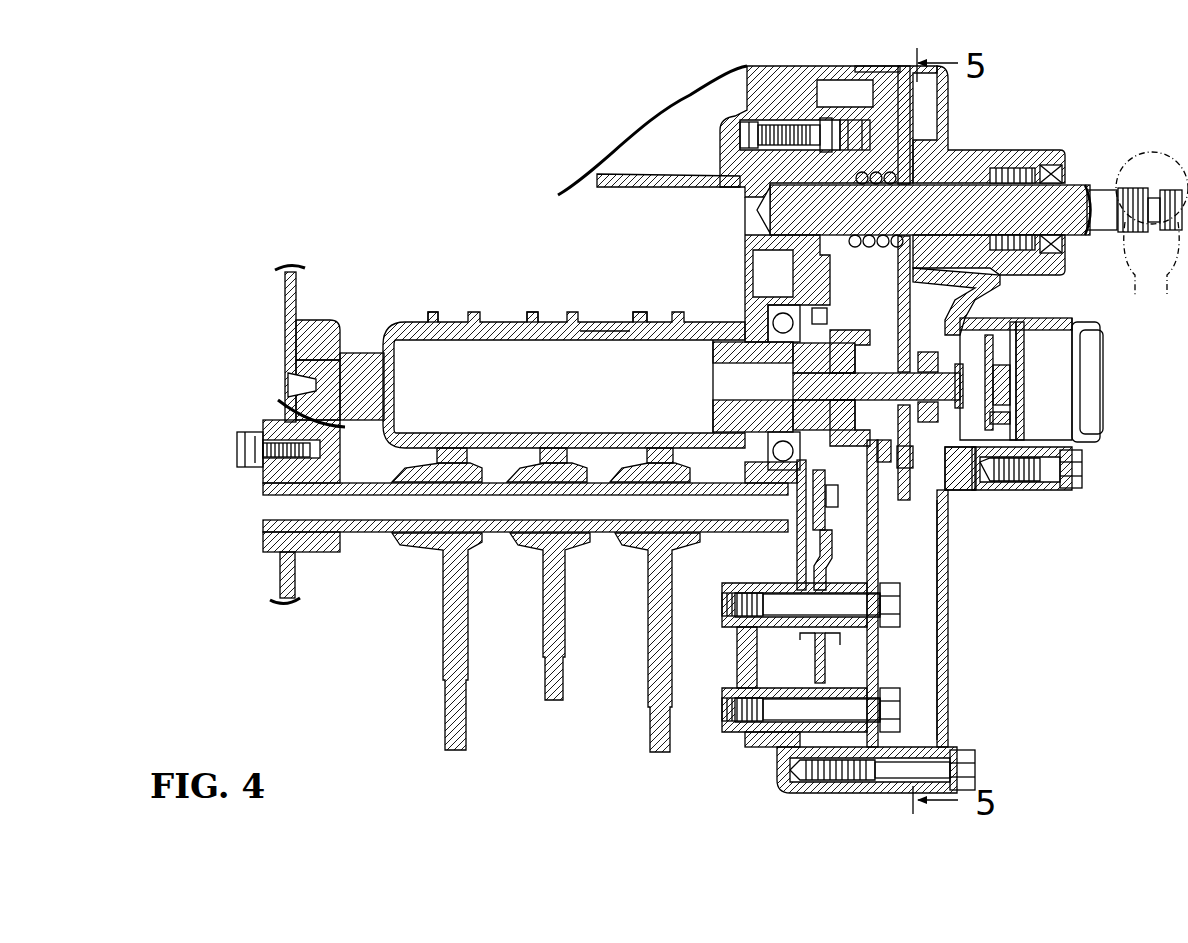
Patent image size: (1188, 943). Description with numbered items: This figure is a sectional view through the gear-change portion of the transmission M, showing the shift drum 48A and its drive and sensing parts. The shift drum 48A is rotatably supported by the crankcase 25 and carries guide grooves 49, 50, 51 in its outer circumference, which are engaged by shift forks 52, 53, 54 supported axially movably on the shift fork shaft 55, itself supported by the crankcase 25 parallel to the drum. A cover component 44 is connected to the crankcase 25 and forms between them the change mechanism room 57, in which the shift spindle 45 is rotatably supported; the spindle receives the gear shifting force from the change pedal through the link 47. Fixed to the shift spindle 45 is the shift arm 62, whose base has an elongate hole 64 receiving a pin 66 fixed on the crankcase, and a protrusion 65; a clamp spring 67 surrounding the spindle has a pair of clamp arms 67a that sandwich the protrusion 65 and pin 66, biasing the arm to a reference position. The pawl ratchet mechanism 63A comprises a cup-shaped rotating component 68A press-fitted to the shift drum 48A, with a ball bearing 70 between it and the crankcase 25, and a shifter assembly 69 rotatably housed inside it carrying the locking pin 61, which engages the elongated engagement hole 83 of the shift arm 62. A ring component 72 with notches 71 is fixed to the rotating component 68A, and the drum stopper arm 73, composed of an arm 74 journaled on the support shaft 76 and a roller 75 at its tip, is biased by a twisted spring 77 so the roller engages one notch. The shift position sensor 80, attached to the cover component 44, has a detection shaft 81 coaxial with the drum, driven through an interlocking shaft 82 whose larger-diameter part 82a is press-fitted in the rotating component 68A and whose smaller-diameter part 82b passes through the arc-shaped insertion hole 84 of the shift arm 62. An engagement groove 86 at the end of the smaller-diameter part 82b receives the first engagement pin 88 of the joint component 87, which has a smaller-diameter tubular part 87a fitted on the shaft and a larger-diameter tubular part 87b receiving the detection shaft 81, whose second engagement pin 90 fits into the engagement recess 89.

The transmission M is at (398, 316).
The crankcase 25 is at (296, 312).
The cover component 44 is at (947, 594).
The shift spindle 45 is at (953, 174).
The link 47 is at (1148, 266).
The shift drum 48A is at (608, 328).
The guide groove 49 is at (660, 316).
The guide groove 50 is at (552, 316).
The guide groove 51 is at (455, 316).
The shift fork 52 is at (647, 544).
The shift fork 53 is at (543, 544).
The shift fork 54 is at (445, 545).
The shift fork shaft 55 is at (363, 533).
The change mechanism room 57 is at (920, 682).
The locking pin 61 is at (887, 462).
The shift arm 62 is at (938, 300).
The pawl ratchet mechanism 63A is at (868, 317).
The elongate hole 64 is at (910, 136).
The protrusion 65 is at (868, 98).
The pin 66 is at (857, 133).
The clamp spring 67 is at (744, 165).
The clamp arm 67a is at (878, 68).
The rotating component 68A is at (812, 358).
The shifter assembly 69 is at (842, 350).
The ball bearing 70 is at (750, 487).
The notch 71 is at (823, 306).
The ring component 72 is at (840, 420).
The drum stopper arm 73 is at (840, 550).
The arm 74 is at (797, 558).
The roller 75 is at (822, 520).
The support shaft 76 is at (878, 674).
The twisted spring 77 is at (828, 746).
The shift position sensor 80 is at (1028, 389).
The detection shaft 81 is at (1018, 360).
The interlocking shaft 82 is at (742, 350).
The larger-diameter part 82a is at (748, 307).
The smaller-diameter part 82b is at (908, 446).
The engagement hole 83 is at (905, 500).
The insertion hole 84 is at (921, 352).
The engagement groove 86 is at (1010, 394).
The joint component 87 is at (1020, 497).
The smaller-diameter tubular part 87a is at (960, 498).
The larger-diameter tubular part 87b is at (985, 495).
The first engagement pin 88 is at (960, 364).
The engagement recess 89 is at (1010, 422).
The second engagement pin 90 is at (990, 343).